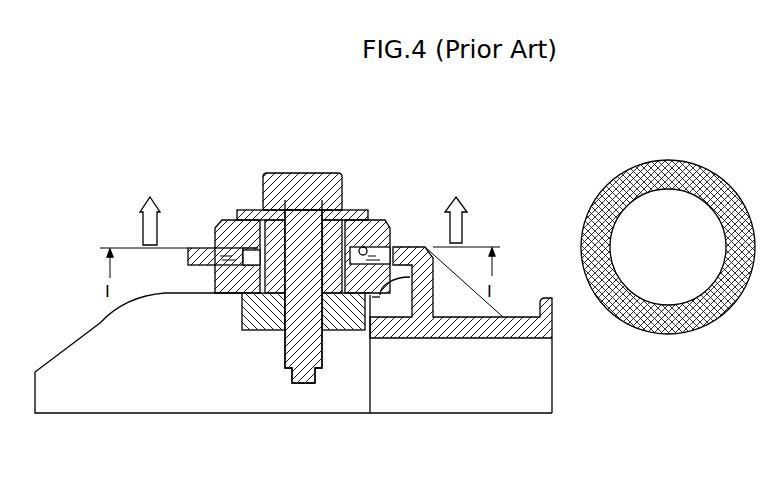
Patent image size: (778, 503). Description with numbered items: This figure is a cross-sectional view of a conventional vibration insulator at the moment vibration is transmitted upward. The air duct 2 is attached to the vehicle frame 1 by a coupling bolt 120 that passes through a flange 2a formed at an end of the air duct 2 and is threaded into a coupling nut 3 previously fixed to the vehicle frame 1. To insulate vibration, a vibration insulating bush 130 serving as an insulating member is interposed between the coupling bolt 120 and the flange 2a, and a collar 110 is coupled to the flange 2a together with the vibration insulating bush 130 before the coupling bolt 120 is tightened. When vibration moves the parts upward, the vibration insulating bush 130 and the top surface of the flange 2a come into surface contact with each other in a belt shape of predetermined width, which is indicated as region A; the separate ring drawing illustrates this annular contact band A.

The vehicle frame 1 is at (148, 388).
The air duct 2 is at (492, 318).
The flange 2a is at (210, 250).
The coupling nut 3 is at (263, 322).
The collar 110 is at (275, 240).
The coupling bolt 120 is at (307, 357).
The vibration insulating bush 130 is at (377, 232).
The surface contact region A is at (678, 330).